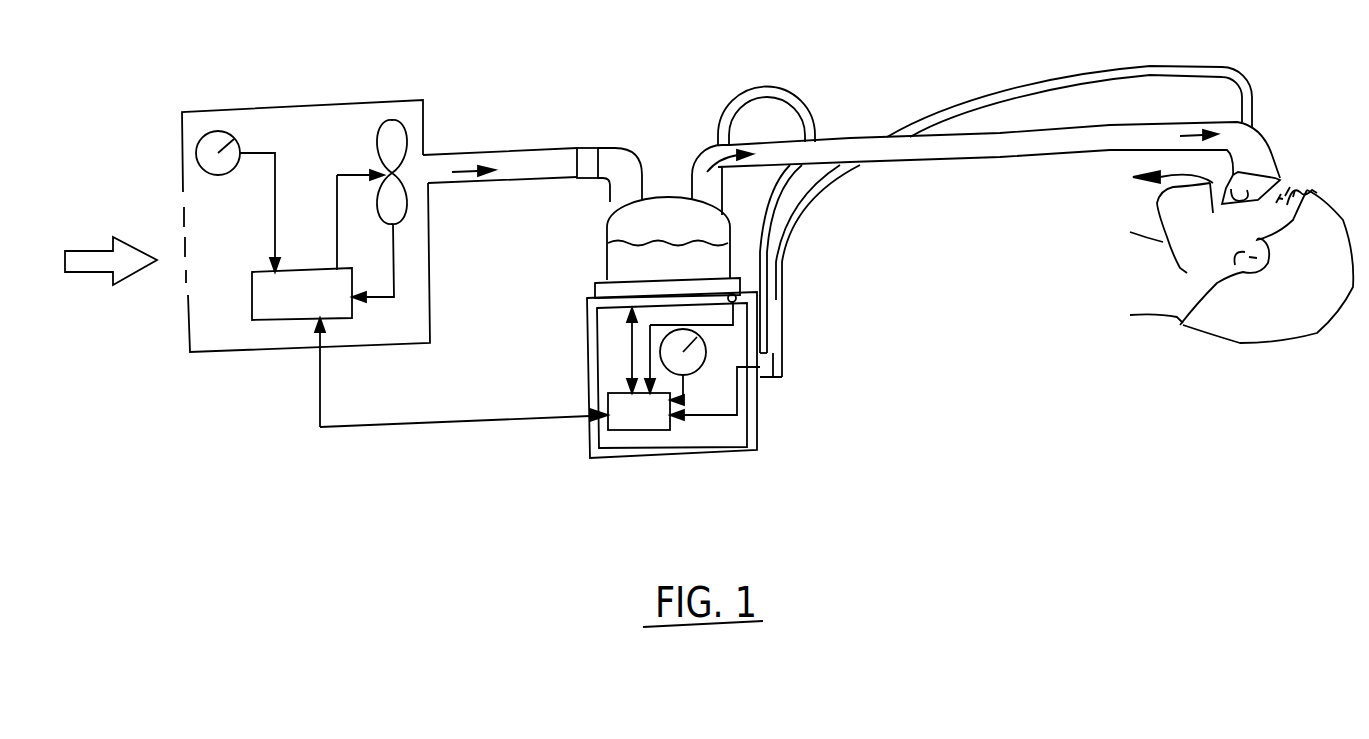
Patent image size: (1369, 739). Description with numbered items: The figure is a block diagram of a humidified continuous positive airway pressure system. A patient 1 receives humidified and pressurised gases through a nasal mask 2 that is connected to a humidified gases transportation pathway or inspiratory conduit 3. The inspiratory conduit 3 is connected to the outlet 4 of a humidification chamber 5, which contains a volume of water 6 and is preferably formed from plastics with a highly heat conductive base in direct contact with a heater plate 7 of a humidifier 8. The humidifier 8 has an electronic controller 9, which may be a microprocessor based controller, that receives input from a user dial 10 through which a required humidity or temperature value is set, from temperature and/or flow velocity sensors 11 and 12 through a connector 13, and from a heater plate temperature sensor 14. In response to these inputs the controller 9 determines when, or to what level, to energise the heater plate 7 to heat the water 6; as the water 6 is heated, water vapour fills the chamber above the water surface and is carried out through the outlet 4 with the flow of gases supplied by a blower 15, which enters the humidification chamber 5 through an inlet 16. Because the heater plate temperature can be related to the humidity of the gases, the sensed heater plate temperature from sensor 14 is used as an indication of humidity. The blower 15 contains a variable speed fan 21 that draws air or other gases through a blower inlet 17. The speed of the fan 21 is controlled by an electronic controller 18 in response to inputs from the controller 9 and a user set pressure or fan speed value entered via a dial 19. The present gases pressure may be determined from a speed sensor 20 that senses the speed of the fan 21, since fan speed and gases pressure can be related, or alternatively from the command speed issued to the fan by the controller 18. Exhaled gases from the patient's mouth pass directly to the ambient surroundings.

The patient 1 is at (1237, 348).
The nasal mask 2 is at (1282, 168).
The inspiratory conduit 3 is at (1022, 158).
The outlet 4 is at (692, 175).
The humidification chamber 5 is at (600, 240).
The water 6 is at (668, 259).
The heater plate 7 is at (595, 288).
The humidifier 8 is at (585, 370).
The electronic controller 9 is at (639, 369).
The dial 10 is at (698, 373).
The temperature and/or flow velocity sensor 11 is at (1253, 112).
The temperature and/or flow velocity sensor 12 is at (722, 130).
The connector 13 is at (782, 377).
The heater plate temperature sensor 14 is at (738, 300).
The blower 15 is at (307, 100).
The inlet 16 is at (607, 200).
The blower inlet 17 is at (182, 282).
The electronic controller 18 is at (280, 322).
The dial 19 is at (221, 131).
The speed sensor 20 is at (395, 280).
The variable speed fan 21 is at (396, 118).